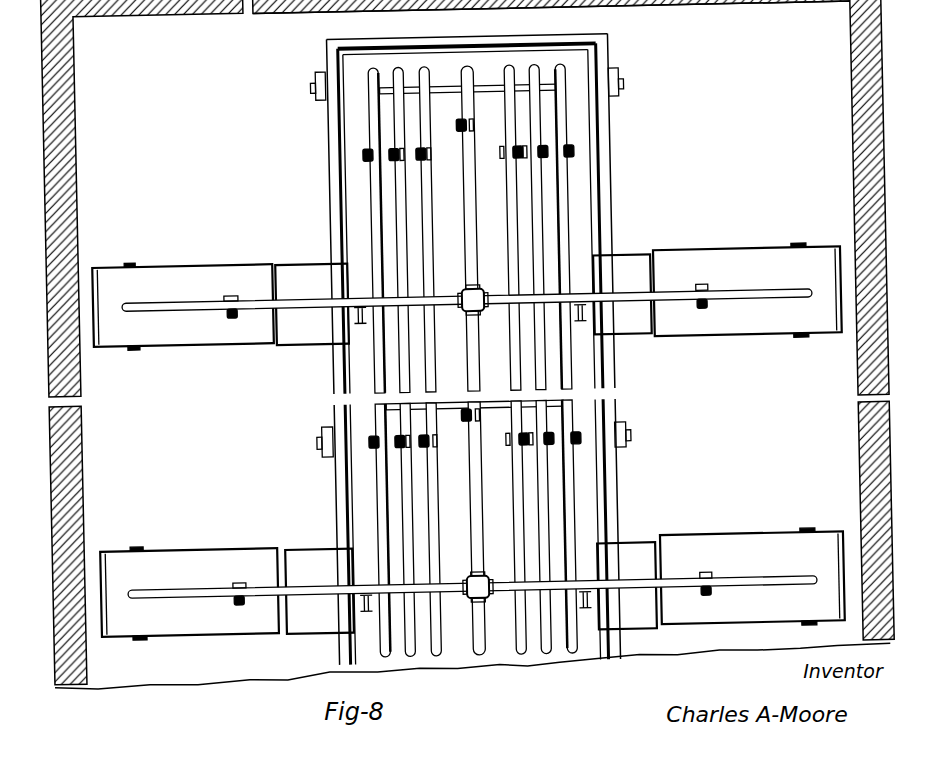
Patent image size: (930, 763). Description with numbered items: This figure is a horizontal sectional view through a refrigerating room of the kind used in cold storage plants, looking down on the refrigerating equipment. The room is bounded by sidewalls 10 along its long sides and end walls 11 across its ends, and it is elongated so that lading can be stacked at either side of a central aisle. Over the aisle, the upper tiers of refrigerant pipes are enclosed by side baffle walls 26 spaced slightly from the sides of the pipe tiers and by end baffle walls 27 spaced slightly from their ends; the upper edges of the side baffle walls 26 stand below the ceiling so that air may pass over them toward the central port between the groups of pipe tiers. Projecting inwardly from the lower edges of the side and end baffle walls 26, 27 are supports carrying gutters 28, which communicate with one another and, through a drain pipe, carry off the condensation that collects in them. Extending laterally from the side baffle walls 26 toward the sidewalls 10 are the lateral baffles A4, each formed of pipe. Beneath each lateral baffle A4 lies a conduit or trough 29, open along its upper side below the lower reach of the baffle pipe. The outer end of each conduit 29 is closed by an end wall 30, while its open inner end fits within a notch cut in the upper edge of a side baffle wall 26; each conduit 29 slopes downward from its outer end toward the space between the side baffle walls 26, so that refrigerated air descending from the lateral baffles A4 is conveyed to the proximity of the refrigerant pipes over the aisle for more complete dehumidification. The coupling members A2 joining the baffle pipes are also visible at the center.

The sidewalls 10 is at (68, 172).
The end walls 11 is at (791, 10).
The side baffle walls 26 is at (608, 211).
The end baffle walls 27 is at (532, 43).
The gutters 28 is at (586, 177).
The conduit or trough 29 is at (701, 267).
The end wall 30 is at (837, 270).
The lateral baffle A4 is at (742, 309).
The coupling hub A2 is at (482, 545).